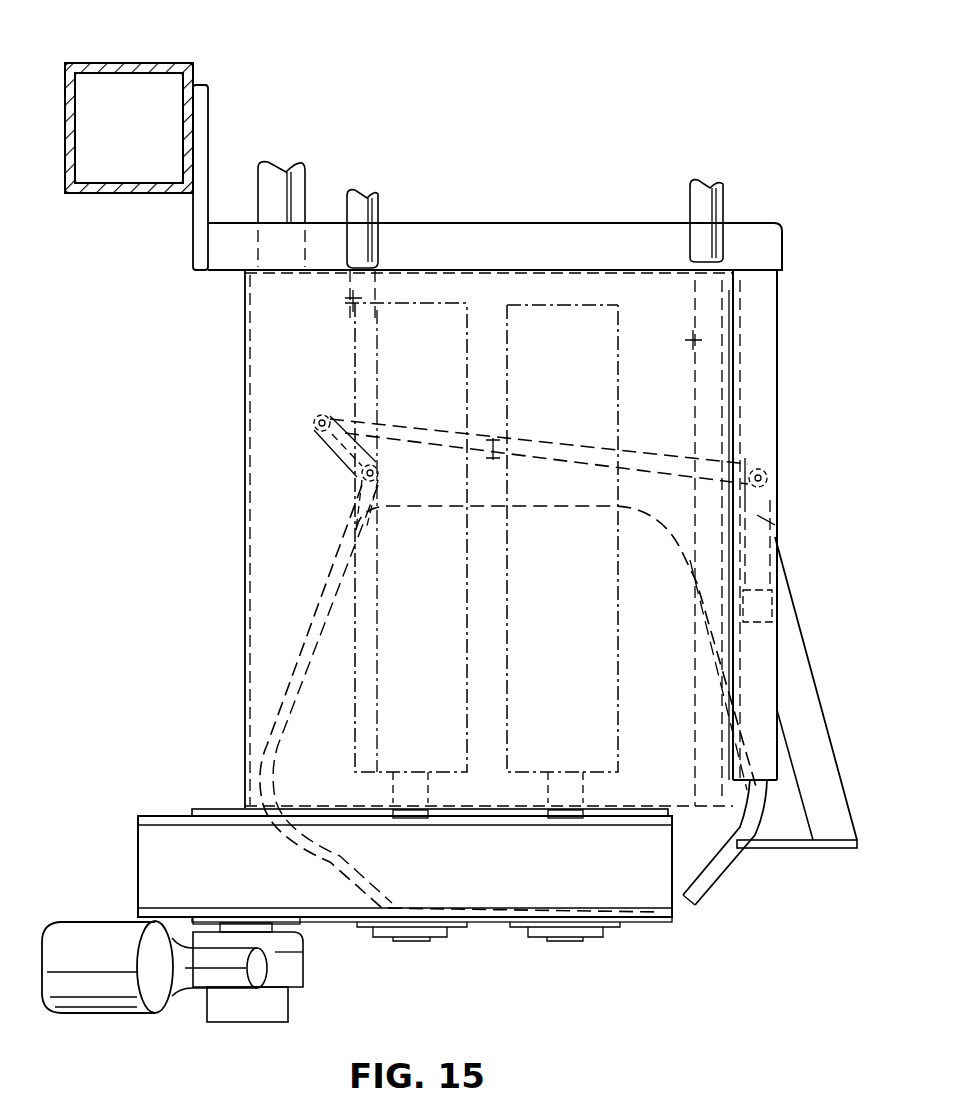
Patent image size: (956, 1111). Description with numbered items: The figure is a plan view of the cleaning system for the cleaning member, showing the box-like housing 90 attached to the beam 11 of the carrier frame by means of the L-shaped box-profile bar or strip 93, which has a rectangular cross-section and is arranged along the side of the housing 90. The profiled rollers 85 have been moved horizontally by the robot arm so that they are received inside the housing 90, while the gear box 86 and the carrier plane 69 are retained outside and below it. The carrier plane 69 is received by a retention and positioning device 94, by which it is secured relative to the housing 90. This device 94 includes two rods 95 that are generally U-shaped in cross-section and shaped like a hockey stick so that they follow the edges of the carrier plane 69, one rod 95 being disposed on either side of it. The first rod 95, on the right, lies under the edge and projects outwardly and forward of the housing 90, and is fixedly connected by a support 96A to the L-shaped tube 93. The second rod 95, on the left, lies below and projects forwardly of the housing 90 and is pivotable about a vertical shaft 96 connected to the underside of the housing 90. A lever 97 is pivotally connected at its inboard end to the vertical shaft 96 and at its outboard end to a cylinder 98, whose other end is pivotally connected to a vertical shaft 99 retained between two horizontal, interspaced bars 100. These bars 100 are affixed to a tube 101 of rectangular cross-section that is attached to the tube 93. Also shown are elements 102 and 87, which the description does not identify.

The beam 11 is at (153, 63).
The L-shaped box-profile bar 93 is at (486, 240).
The locating pin 102 is at (350, 298).
The box-like housing 90 is at (268, 362).
The cylinder 98 is at (546, 450).
The retention and positioning device 94 is at (655, 445).
The lever 97 is at (336, 455).
The vertical shaft 96 is at (382, 470).
The vertical shaft 99 is at (770, 472).
The carrier plane 69 is at (543, 532).
The horizontal interspaced bars 100 is at (760, 522).
The tube 101 is at (777, 603).
The support 96A is at (817, 717).
The profiled rollers 85 is at (588, 729).
The rods 95 is at (265, 747).
The gear box 86 is at (152, 858).
The motor 87 is at (128, 997).